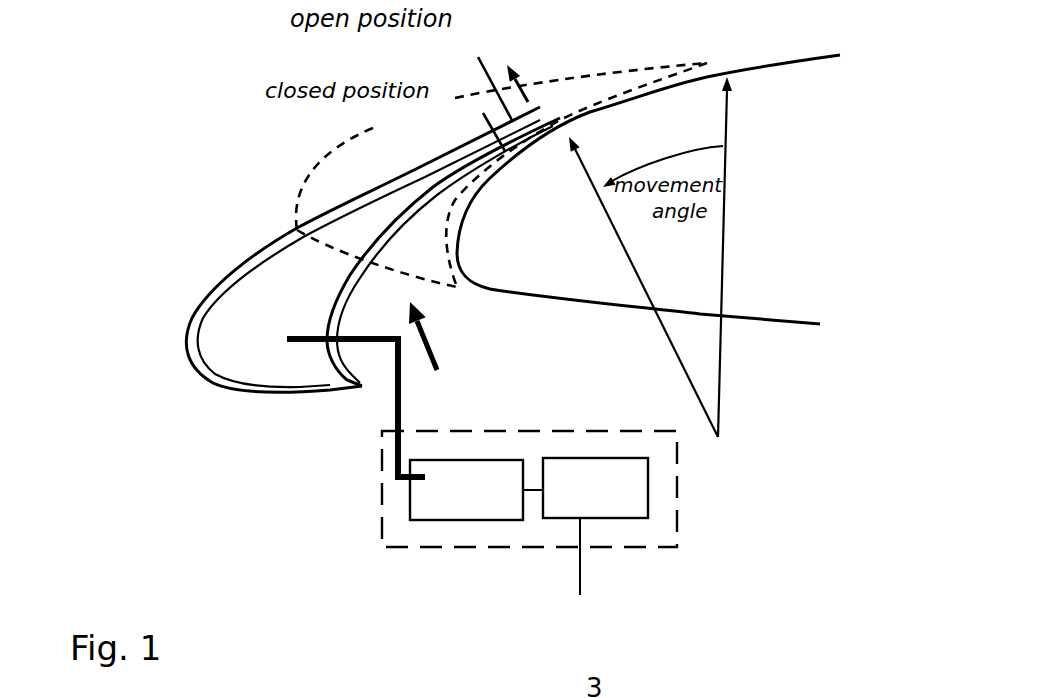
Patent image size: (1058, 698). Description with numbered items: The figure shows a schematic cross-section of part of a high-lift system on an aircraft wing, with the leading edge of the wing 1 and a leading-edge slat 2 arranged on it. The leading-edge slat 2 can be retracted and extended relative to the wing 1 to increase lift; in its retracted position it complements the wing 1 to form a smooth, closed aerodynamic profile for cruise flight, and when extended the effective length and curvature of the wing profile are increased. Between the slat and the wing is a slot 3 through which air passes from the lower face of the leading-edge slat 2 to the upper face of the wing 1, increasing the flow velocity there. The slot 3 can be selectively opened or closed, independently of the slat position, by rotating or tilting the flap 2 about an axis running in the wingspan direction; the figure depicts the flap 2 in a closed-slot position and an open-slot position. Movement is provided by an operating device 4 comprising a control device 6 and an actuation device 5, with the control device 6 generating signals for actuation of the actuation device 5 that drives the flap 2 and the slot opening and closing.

The wing 1 is at (778, 262).
The leading-edge slat 2 is at (293, 300).
The slot 3 is at (438, 351).
The operating device 4 is at (647, 533).
The actuation device 5 is at (460, 487).
The control device 6 is at (618, 477).